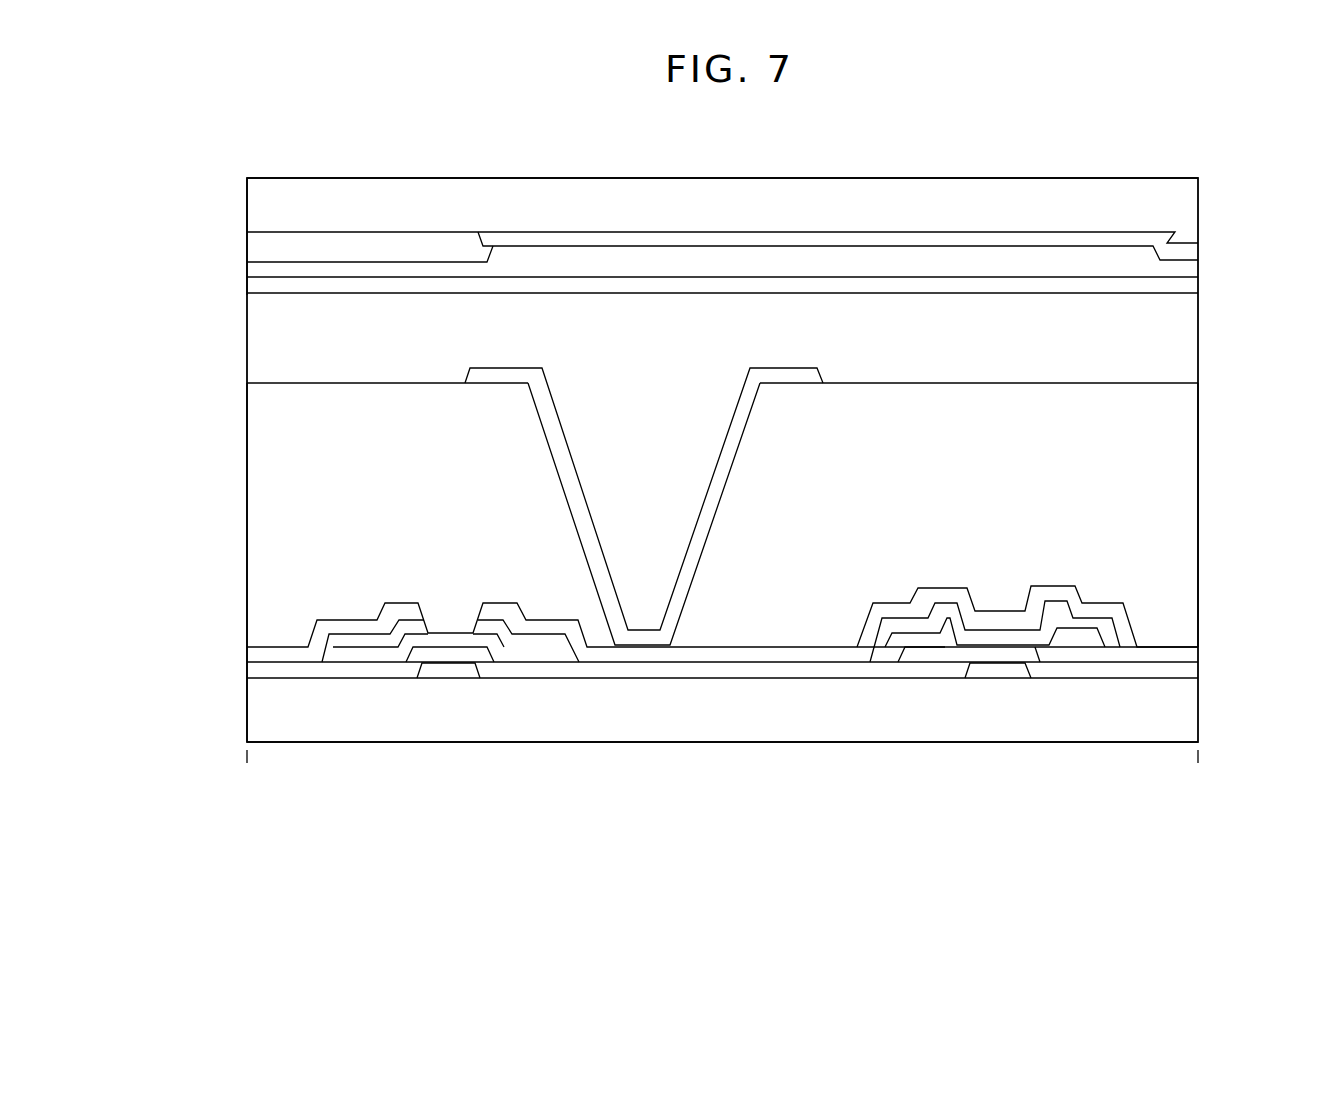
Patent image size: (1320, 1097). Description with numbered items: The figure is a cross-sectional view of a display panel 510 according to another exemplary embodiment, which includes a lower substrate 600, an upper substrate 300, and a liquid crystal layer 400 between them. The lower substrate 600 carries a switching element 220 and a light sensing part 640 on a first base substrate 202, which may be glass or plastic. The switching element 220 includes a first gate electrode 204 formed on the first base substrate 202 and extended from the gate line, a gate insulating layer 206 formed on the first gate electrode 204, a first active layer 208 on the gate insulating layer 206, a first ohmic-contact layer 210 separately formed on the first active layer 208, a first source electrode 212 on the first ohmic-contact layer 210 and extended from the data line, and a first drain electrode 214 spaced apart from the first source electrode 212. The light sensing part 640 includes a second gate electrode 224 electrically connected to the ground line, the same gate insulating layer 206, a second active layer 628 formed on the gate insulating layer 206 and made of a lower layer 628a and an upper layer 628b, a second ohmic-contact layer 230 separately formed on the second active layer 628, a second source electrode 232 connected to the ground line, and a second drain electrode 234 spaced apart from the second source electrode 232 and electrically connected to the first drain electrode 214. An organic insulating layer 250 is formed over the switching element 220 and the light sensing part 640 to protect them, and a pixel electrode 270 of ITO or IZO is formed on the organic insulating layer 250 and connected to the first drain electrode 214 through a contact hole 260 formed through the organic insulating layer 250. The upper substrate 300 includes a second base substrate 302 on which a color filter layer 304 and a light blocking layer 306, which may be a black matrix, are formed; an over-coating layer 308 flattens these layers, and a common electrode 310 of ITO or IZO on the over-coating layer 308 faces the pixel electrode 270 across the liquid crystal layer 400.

The first base substrate 202 is at (1186, 703).
The first gate electrode 204 is at (452, 670).
The gate insulating layer 206 is at (513, 667).
The first active layer 208 is at (395, 650).
The first ohmic-contact layer 210 is at (345, 645).
The first source electrode 212 is at (287, 650).
The first drain electrode 214 is at (600, 655).
The switching element 220 is at (622, 786).
The second gate electrode 224 is at (999, 667).
The second ohmic-contact layer 230 is at (900, 625).
The second source electrode 232 is at (1161, 652).
The second drain electrode 234 is at (851, 652).
The organic insulating layer 250 is at (1188, 518).
The contact hole 260 is at (657, 523).
The pixel electrode 270 is at (818, 374).
The upper substrate 300 is at (240, 180).
The second base substrate 302 is at (1186, 199).
The color filter layer 304 is at (1163, 242).
The light blocking layer 306 is at (1186, 257).
The over-coating layer 308 is at (1186, 280).
The common electrode 310 is at (1186, 293).
The liquid crystal layer 400 is at (258, 332).
The display panel 510 is at (1208, 139).
The lower substrate 600 is at (240, 385).
The second active layer 628 is at (1135, 786).
The lower layer 628a is at (1055, 650).
The upper layer 628b is at (1115, 640).
The light sensing part 640 is at (1178, 832).